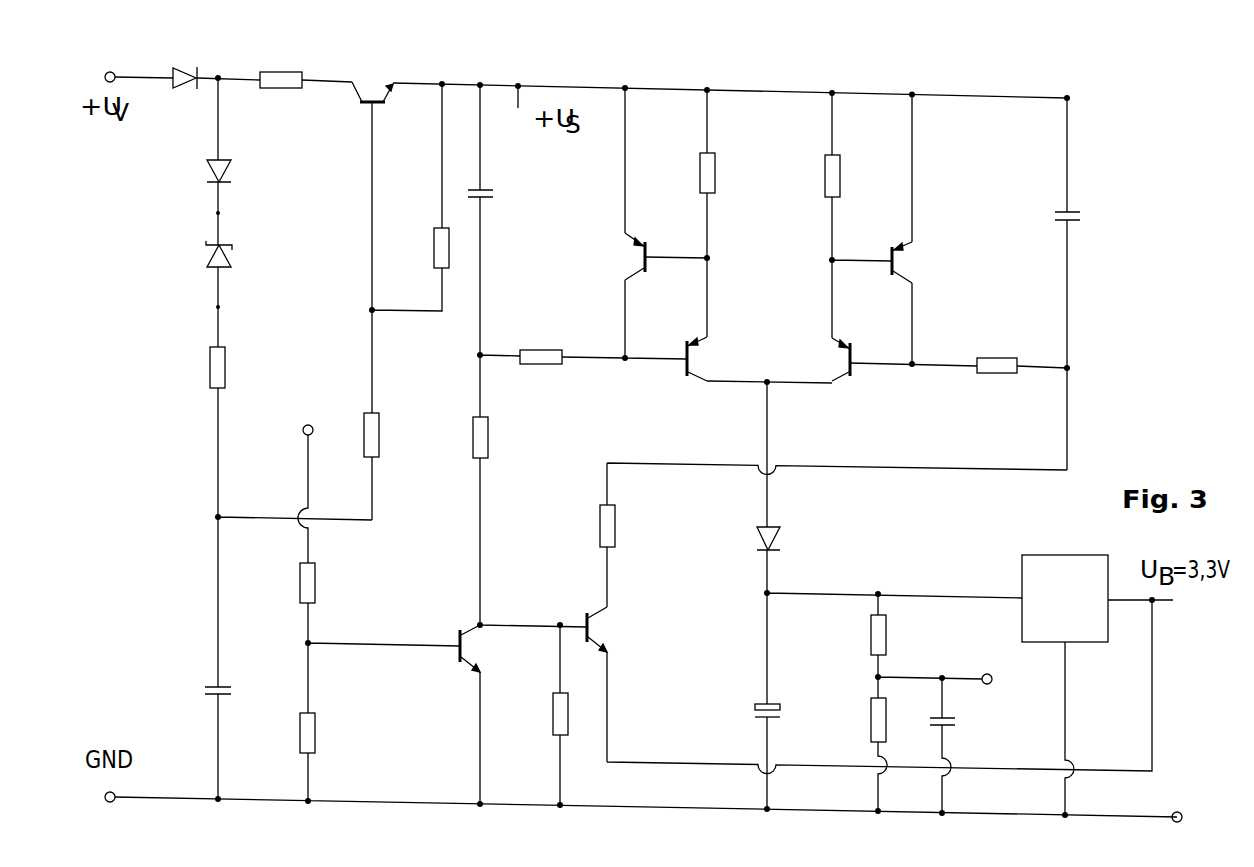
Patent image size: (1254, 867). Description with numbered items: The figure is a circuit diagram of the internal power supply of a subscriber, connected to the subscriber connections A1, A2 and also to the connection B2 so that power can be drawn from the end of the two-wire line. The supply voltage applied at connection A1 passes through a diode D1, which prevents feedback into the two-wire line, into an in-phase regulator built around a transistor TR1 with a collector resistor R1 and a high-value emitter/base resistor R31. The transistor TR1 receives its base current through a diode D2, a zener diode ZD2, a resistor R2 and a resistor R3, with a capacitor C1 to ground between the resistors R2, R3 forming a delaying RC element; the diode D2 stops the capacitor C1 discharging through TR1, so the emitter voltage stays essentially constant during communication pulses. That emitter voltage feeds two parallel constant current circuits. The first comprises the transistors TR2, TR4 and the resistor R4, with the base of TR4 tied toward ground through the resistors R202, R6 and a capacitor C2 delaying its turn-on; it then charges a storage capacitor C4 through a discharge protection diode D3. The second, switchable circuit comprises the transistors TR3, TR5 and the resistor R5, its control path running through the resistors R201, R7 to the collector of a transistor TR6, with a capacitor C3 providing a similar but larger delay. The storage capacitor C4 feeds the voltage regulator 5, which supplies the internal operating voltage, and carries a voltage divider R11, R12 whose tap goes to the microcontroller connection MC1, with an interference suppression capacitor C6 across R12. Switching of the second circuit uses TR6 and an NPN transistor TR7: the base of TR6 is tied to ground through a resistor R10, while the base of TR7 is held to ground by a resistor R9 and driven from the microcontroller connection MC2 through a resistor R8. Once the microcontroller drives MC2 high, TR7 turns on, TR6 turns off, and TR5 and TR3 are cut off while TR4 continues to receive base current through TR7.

The connection A1 is at (112, 59).
The connection A2 is at (93, 794).
The connection B2 is at (1196, 818).
The connection of the microcontroller MC1 is at (1014, 679).
The connection of the microcontroller MC2 is at (308, 414).
The voltage regulator 5 is at (1073, 612).
The diode D1 is at (187, 67).
The diode D2 is at (207, 170).
The zener diode ZD2 is at (212, 256).
The discharge protection diode D3 is at (775, 532).
The collector resistor R1 is at (288, 90).
The resistor R2 is at (212, 368).
The resistor R3 is at (376, 435).
The emitter/base resistor R31 is at (440, 248).
The resistor R4 is at (705, 170).
The resistor R5 is at (840, 175).
The resistor R6 is at (487, 442).
The resistor R7 is at (612, 530).
The resistor R8 is at (313, 582).
The resistor R9 is at (313, 724).
The resistor R10 is at (558, 715).
The voltage divider resistor R11 is at (878, 638).
The voltage divider resistor R12 is at (878, 722).
The resistor R201 is at (995, 362).
The resistor R202 is at (540, 350).
The capacitor C1 is at (205, 688).
The capacitor C2 is at (493, 195).
The capacitor C3 is at (1079, 215).
The storage capacitor C4 is at (756, 709).
The interference suppression capacitor C6 is at (955, 721).
The transistor TR1 is at (378, 90).
The transistor TR2 is at (643, 255).
The transistor TR3 is at (895, 262).
The transistor TR4 is at (687, 372).
The transistor TR5 is at (852, 375).
The transistor TR6 is at (590, 622).
The NPN transistor TR7 is at (458, 640).